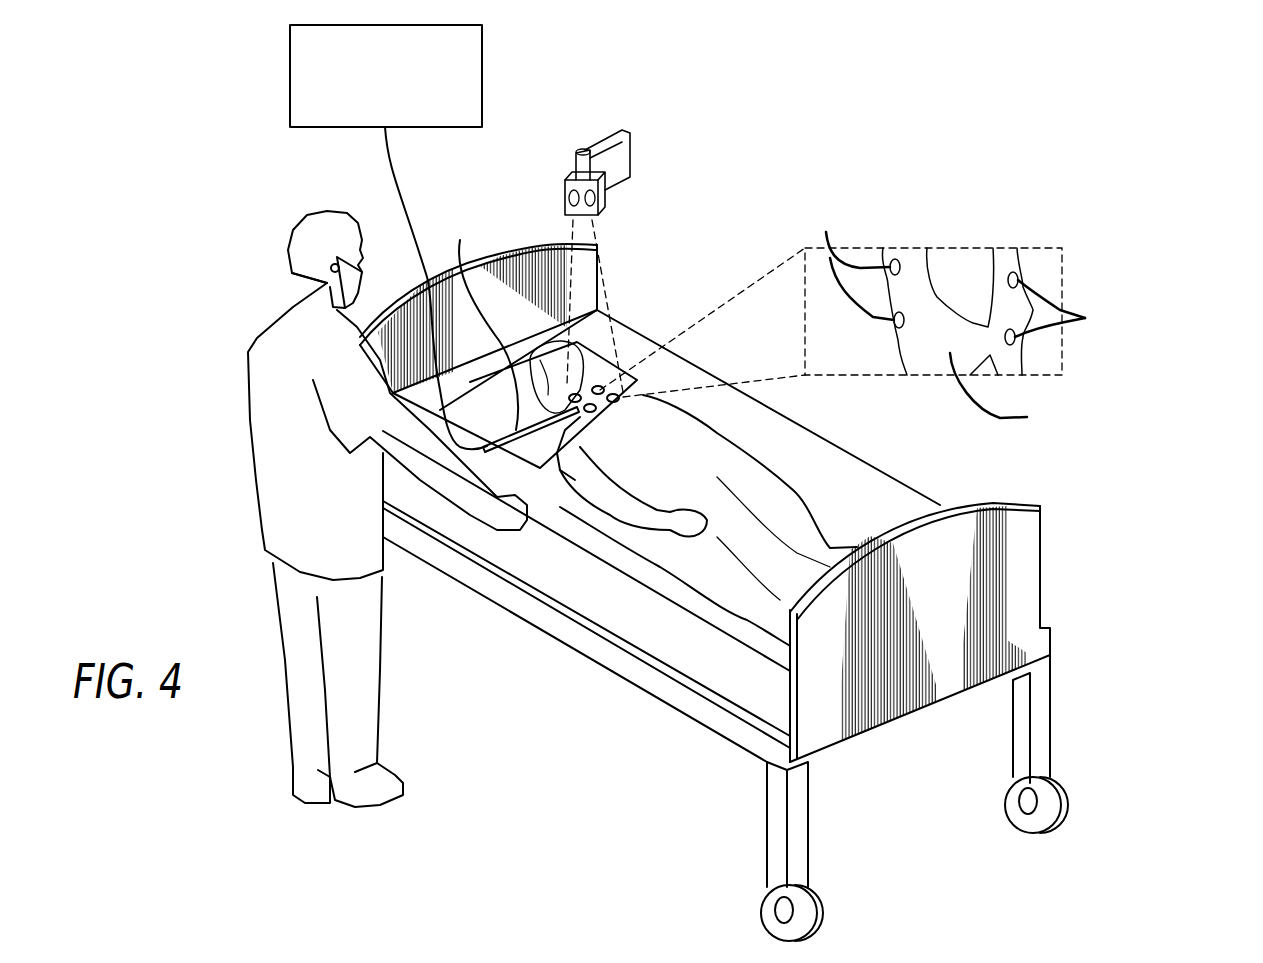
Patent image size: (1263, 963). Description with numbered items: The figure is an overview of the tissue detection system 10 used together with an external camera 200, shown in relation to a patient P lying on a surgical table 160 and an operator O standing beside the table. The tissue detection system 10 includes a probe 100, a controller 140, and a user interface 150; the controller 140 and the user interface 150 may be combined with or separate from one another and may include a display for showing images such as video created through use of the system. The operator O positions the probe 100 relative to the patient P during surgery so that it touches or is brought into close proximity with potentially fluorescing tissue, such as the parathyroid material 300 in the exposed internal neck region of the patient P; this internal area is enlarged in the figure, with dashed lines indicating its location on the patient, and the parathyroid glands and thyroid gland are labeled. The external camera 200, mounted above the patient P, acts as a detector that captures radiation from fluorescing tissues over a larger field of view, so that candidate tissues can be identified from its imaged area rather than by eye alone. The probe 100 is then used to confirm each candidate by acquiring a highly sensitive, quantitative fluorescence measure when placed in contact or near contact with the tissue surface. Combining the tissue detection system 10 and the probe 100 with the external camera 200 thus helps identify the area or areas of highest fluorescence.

The controller 140 is at (313, 237).
The user interface 150 is at (290, 77).
The external camera 200 is at (603, 135).
The tissue detection system 10 is at (675, 253).
The probe 100 is at (511, 335).
The surgical table 160 is at (935, 507).
The parathyroid material 300 is at (908, 262).
The patient P is at (803, 465).
The operator O is at (389, 664).